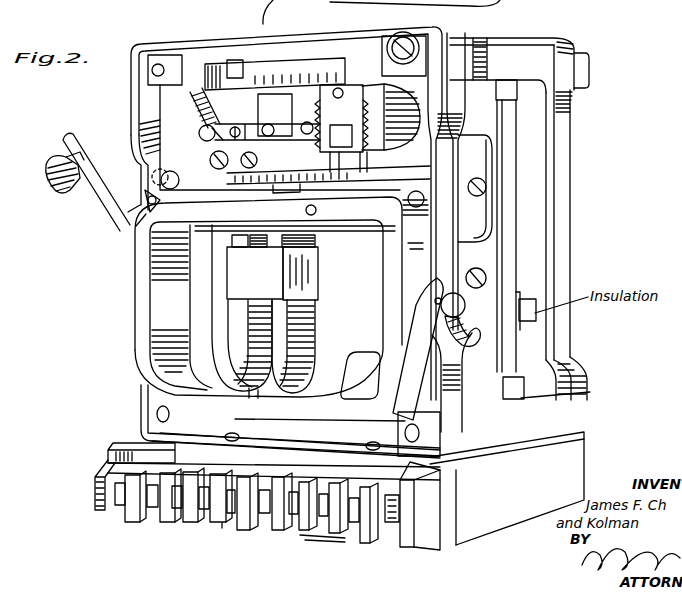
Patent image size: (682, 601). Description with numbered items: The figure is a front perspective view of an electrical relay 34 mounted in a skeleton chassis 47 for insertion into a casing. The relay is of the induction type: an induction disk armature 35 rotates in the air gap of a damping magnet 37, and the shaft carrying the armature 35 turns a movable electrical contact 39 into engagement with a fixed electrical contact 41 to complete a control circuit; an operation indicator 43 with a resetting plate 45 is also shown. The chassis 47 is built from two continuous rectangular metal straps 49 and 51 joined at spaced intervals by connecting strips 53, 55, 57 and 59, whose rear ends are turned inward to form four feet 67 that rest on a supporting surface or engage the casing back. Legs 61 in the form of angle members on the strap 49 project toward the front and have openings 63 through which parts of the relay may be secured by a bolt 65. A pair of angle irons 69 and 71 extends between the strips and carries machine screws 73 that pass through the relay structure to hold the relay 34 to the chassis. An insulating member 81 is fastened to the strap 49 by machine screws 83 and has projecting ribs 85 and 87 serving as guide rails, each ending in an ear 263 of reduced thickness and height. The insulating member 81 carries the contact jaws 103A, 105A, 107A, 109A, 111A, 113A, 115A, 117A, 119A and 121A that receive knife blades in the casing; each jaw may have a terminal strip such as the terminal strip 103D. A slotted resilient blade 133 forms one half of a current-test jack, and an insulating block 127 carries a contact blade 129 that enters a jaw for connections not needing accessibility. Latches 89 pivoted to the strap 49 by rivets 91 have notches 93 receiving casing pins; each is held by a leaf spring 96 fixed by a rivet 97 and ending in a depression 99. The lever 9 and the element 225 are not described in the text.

The operating lever 9 is at (381, 12).
The angle iron 71 is at (240, 62).
The bolt 65 is at (400, 42).
The connecting strip 55 is at (501, 47).
The metal strap 49 is at (128, 108).
The connecting strip 57 is at (185, 88).
The fixed electrical contact 41 is at (268, 125).
The operation indicator 43 is at (350, 97).
The movable electrical contact 39 is at (306, 134).
The resetting plate 45 is at (412, 178).
The chassis 47 is at (561, 162).
The metal strap 51 is at (562, 250).
The feet 67 is at (587, 377).
The machine screw 73 is at (476, 198).
The angle iron 69 is at (512, 362).
The insulating block 127 is at (522, 292).
The contact blade 129 is at (526, 298).
The damping magnet 37 is at (134, 274).
The induction disk armature 35 is at (220, 232).
The electrical relay 34 is at (428, 255).
The latch 89 is at (55, 195).
The notch 93 is at (179, 181).
The depression 99 is at (166, 176).
The rivet 91 is at (145, 175).
The leaf spring 96 is at (125, 216).
The rivet 97 is at (133, 227).
The connecting strip 59 is at (143, 397).
The opening 63 is at (157, 410).
The machine screw 83 is at (238, 434).
The leg 61 is at (135, 422).
The connecting strip 53 is at (519, 432).
The terminal strip 103D is at (452, 480).
The ear 263 is at (450, 510).
The rib 85 is at (499, 523).
The insulating member 81 is at (462, 571).
The rib 87 is at (94, 505).
The contact jaw 121A is at (117, 510).
The contact jaw 119A is at (147, 513).
The contact jaw 117A is at (173, 513).
The contact jaw 115A is at (208, 518).
The contact 225 is at (222, 523).
The contact jaw 113A is at (234, 533).
The contact jaw 111A is at (264, 515).
The contact jaw 109A is at (290, 507).
The contact jaw 107A is at (320, 530).
The resilient blade 133 is at (337, 537).
The contact jaw 105A is at (352, 543).
The contact jaw 103A is at (387, 533).